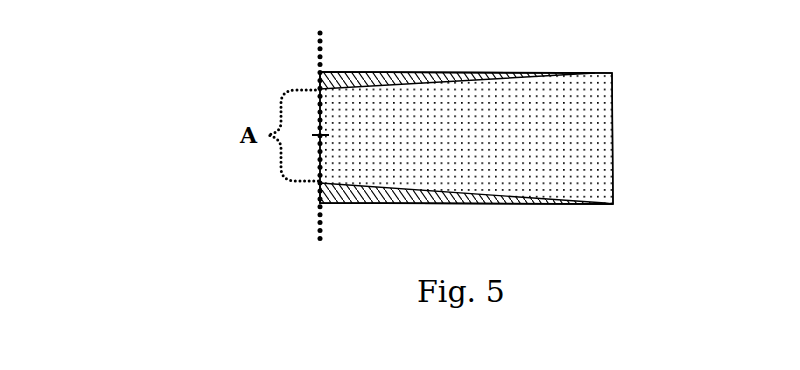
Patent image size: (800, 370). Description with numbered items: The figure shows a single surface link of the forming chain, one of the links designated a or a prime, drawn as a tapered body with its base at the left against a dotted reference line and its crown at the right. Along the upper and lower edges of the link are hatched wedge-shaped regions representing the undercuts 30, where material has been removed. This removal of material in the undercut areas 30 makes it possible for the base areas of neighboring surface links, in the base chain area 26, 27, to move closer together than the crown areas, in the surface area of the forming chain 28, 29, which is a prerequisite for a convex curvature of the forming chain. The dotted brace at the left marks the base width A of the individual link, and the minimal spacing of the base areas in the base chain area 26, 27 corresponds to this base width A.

The base chain area 26 is at (235, 136).
The base chain area 27 is at (318, 222).
The surface area of the forming chain 28 is at (543, 138).
The surface area of the forming chain 29 is at (636, 135).
The undercut 30 is at (343, 80).